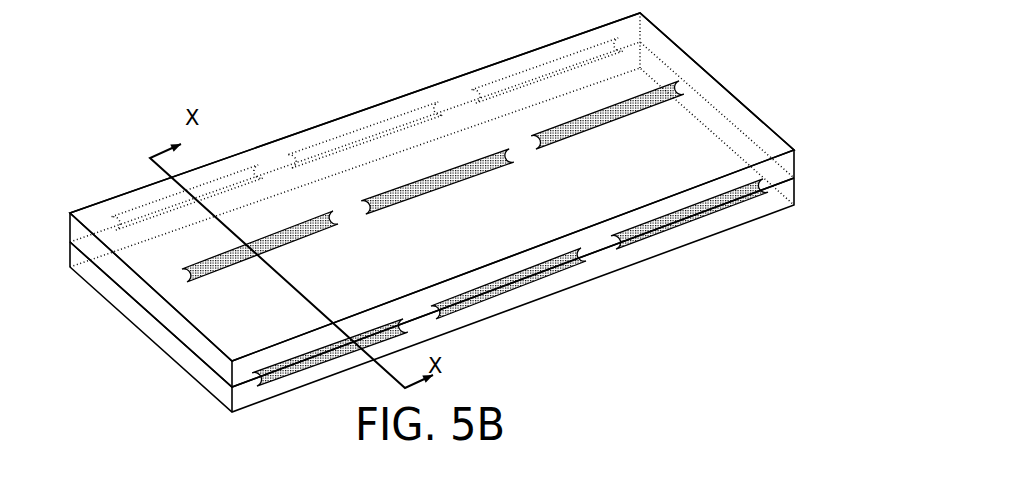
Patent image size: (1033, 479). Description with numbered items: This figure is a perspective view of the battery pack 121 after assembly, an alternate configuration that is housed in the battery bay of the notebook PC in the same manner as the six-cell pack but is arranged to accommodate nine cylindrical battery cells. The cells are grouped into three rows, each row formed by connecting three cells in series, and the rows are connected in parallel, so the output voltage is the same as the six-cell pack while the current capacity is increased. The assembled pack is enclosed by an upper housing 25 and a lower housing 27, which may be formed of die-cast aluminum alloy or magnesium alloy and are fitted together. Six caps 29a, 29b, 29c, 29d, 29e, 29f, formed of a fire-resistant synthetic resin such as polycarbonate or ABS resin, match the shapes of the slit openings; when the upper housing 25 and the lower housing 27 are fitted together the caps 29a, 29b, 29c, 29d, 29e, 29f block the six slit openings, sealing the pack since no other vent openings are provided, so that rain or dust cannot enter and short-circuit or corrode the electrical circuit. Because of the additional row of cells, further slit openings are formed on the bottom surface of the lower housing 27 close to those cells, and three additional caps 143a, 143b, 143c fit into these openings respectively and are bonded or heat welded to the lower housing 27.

The upper housing 25 is at (153, 343).
The lower housing 27 is at (160, 257).
The battery pack 121 is at (251, 134).
The cap 29a is at (313, 352).
The cap 29b is at (492, 281).
The cap 29c is at (637, 228).
The cap 29d is at (233, 152).
The cap 29e is at (413, 113).
The cap 29f is at (560, 63).
The cap 143a is at (264, 238).
The cap 143b is at (430, 176).
The cap 143c is at (591, 114).